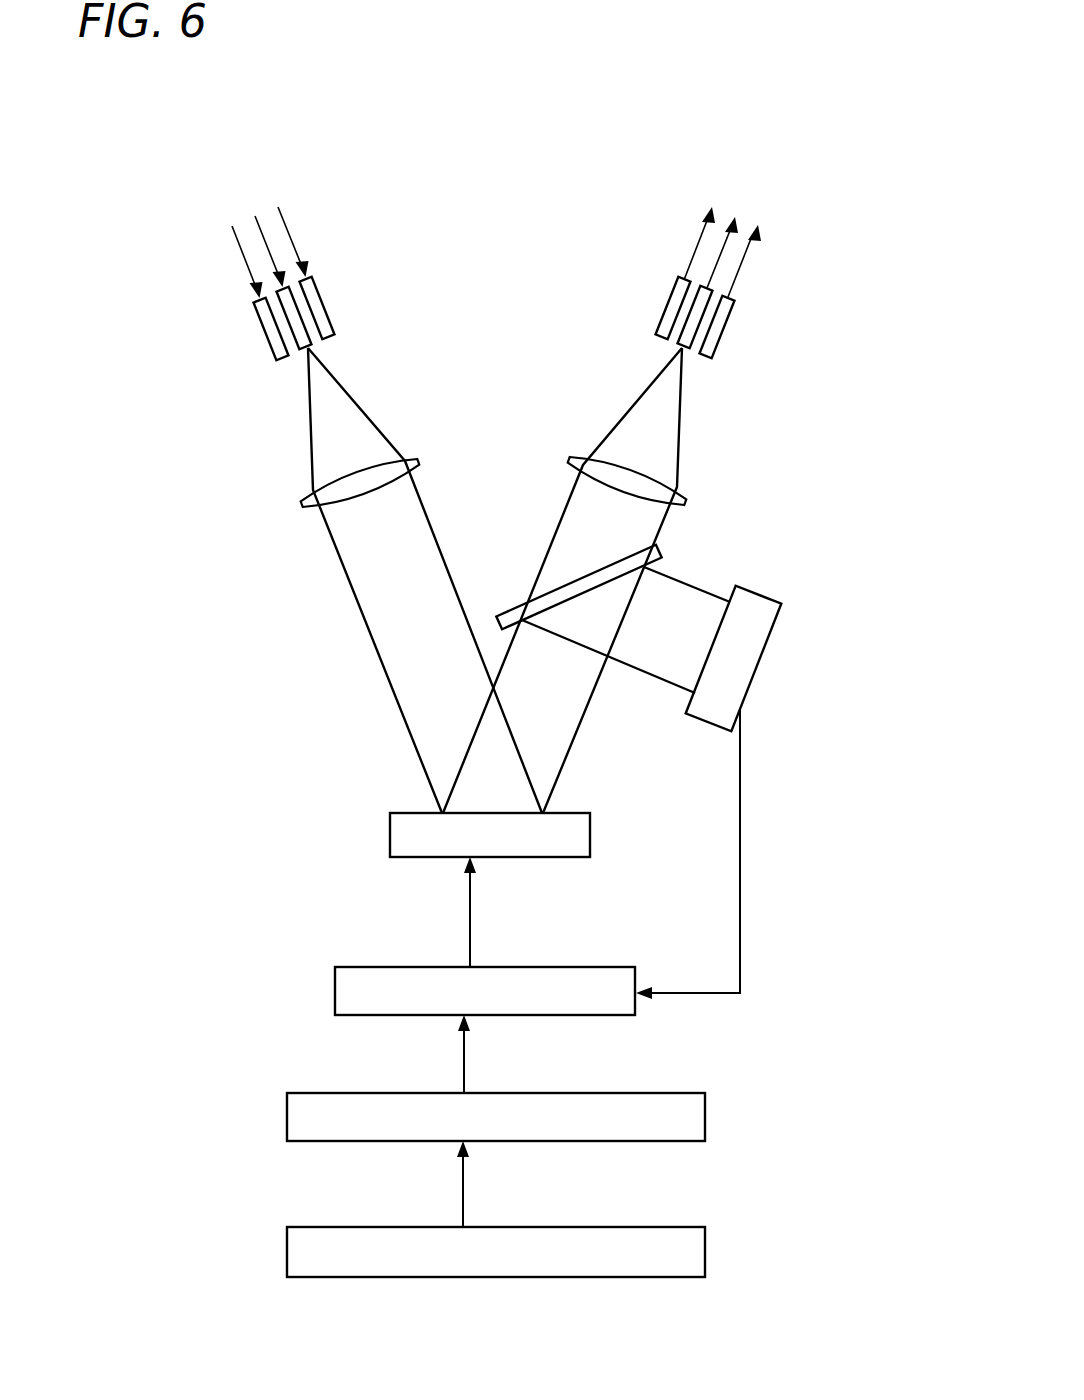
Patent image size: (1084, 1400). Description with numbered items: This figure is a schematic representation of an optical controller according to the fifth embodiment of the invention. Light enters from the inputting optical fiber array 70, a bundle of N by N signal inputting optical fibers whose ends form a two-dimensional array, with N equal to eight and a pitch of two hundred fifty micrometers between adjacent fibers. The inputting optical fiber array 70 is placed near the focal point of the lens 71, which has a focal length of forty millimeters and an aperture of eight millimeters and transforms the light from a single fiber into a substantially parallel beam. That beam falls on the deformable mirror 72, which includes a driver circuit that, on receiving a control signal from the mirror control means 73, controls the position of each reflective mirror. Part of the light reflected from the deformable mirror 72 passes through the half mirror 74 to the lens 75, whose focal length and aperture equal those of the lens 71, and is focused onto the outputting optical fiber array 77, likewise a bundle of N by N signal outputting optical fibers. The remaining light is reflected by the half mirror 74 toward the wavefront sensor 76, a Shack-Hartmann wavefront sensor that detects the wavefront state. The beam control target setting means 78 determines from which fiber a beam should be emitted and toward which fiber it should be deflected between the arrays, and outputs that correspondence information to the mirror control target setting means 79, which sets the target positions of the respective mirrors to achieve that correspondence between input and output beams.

The inputting optical fiber array 70 is at (255, 332).
The lens 71 is at (300, 505).
The deformable mirror 72 is at (405, 833).
The mirror control means 73 is at (637, 1015).
The half mirror 74 is at (657, 553).
The lens 75 is at (688, 495).
The wavefront sensor 76 is at (763, 622).
The outputting optical fiber array 77 is at (732, 330).
The beam control target setting means 78 is at (672, 1277).
The mirror control target setting means 79 is at (672, 1141).